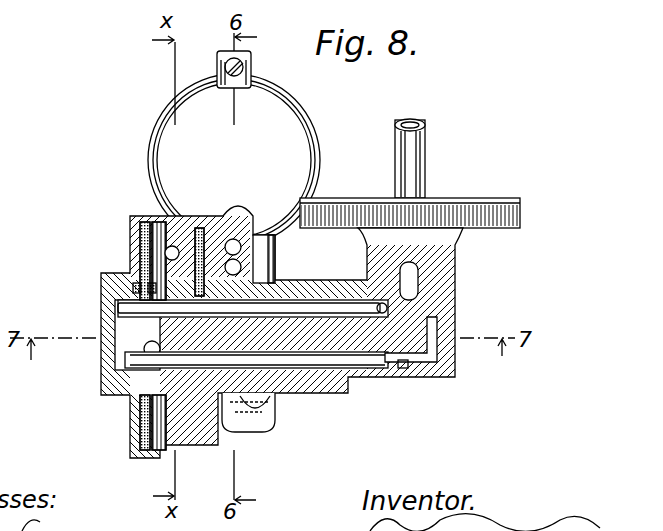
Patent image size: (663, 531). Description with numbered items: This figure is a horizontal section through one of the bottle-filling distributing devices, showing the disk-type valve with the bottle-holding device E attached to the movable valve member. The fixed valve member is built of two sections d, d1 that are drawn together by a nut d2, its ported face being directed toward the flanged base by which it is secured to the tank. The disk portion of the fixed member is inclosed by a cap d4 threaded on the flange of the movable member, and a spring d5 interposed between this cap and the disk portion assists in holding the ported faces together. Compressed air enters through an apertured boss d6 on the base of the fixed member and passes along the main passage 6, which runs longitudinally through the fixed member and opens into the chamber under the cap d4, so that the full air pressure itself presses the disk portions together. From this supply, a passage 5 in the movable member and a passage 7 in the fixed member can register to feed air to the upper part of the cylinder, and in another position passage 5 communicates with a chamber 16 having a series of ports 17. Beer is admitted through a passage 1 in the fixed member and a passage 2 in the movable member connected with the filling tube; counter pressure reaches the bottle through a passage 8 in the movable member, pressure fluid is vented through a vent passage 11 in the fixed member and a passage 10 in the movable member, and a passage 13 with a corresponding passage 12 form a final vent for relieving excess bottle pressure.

The bottle-holding device E is at (234, 148).
The passage 1 is at (404, 300).
The passage 2 is at (243, 333).
The passage 5 is at (229, 240).
The passage 6 is at (144, 343).
The passage 7 is at (137, 335).
The passage 8 is at (259, 277).
The passage 10 is at (256, 425).
The vent passage 11 is at (140, 417).
The passage 12 is at (233, 425).
The passage 13 is at (180, 447).
The chamber 16 is at (132, 256).
The ports 17 is at (187, 246).
The section of fixed valve member d is at (352, 342).
The section of fixed valve member d1 is at (298, 393).
The nut d2 is at (324, 393).
The cap d4 is at (136, 252).
The spring d5 is at (152, 297).
The apertured boss d6 is at (420, 306).